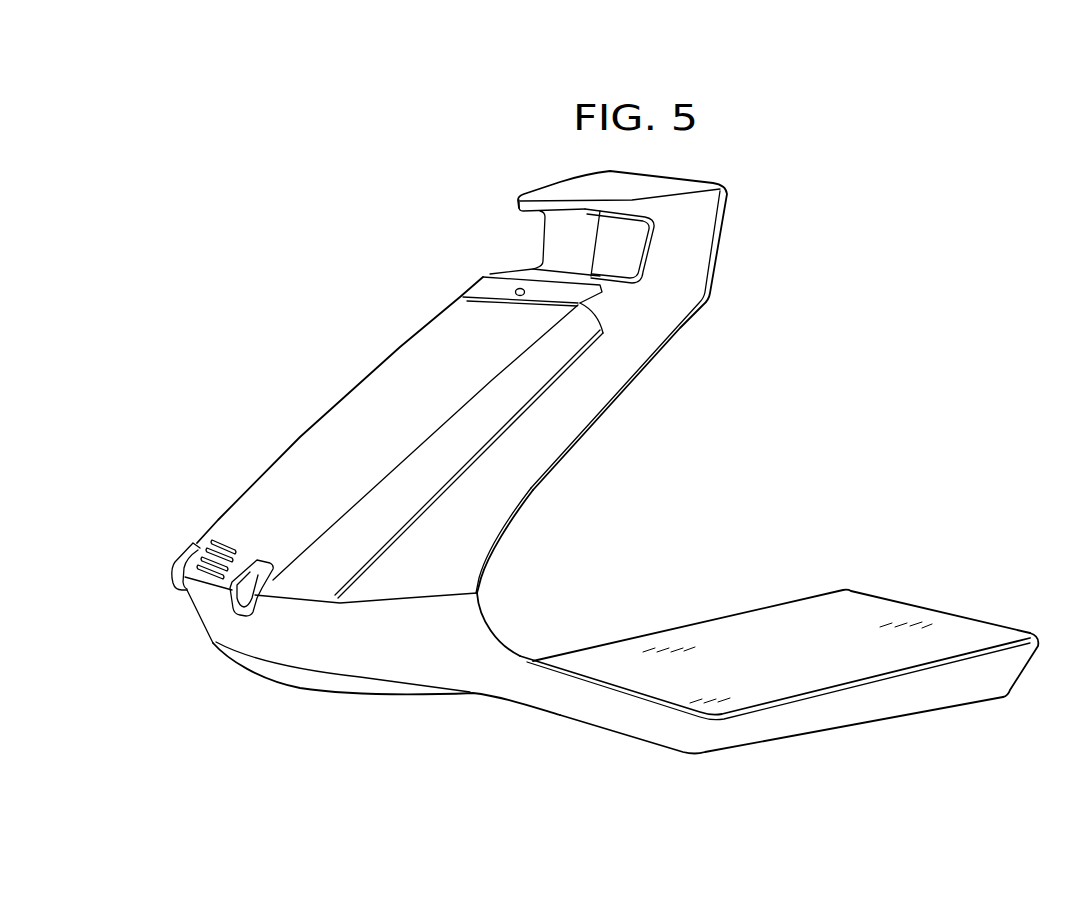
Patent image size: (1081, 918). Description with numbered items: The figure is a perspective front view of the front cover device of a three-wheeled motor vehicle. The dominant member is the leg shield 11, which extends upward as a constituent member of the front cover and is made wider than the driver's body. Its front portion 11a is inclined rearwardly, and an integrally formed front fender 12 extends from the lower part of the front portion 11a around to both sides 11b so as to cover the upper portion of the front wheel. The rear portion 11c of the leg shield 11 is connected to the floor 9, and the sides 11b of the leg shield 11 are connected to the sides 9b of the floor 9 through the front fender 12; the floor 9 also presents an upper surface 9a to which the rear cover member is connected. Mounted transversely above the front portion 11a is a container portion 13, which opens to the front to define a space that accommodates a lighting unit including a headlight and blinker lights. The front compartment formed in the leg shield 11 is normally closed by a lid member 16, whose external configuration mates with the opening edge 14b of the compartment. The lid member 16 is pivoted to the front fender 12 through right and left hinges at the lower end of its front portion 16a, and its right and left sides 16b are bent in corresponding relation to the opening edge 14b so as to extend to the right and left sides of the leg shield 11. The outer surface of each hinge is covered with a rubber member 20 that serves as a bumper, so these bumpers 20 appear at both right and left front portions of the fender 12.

The floor 9 is at (928, 632).
The upper surface of the floor 9a is at (745, 630).
The sides of the floor 9b is at (823, 720).
The leg shield 11 is at (619, 376).
The front portion of the leg shield 11a is at (485, 289).
The sides of the leg shield 11b is at (532, 483).
The rear portion of the leg shield 11c is at (492, 620).
The front fender 12 is at (337, 663).
The container portion 13 is at (539, 212).
The opening edge of the front compartment 14b is at (545, 398).
The lid member 16 is at (372, 398).
The front portion of the lid member 16a is at (295, 465).
The right and left sides of the lid member 16b is at (437, 462).
The rubber member 20 is at (173, 567).